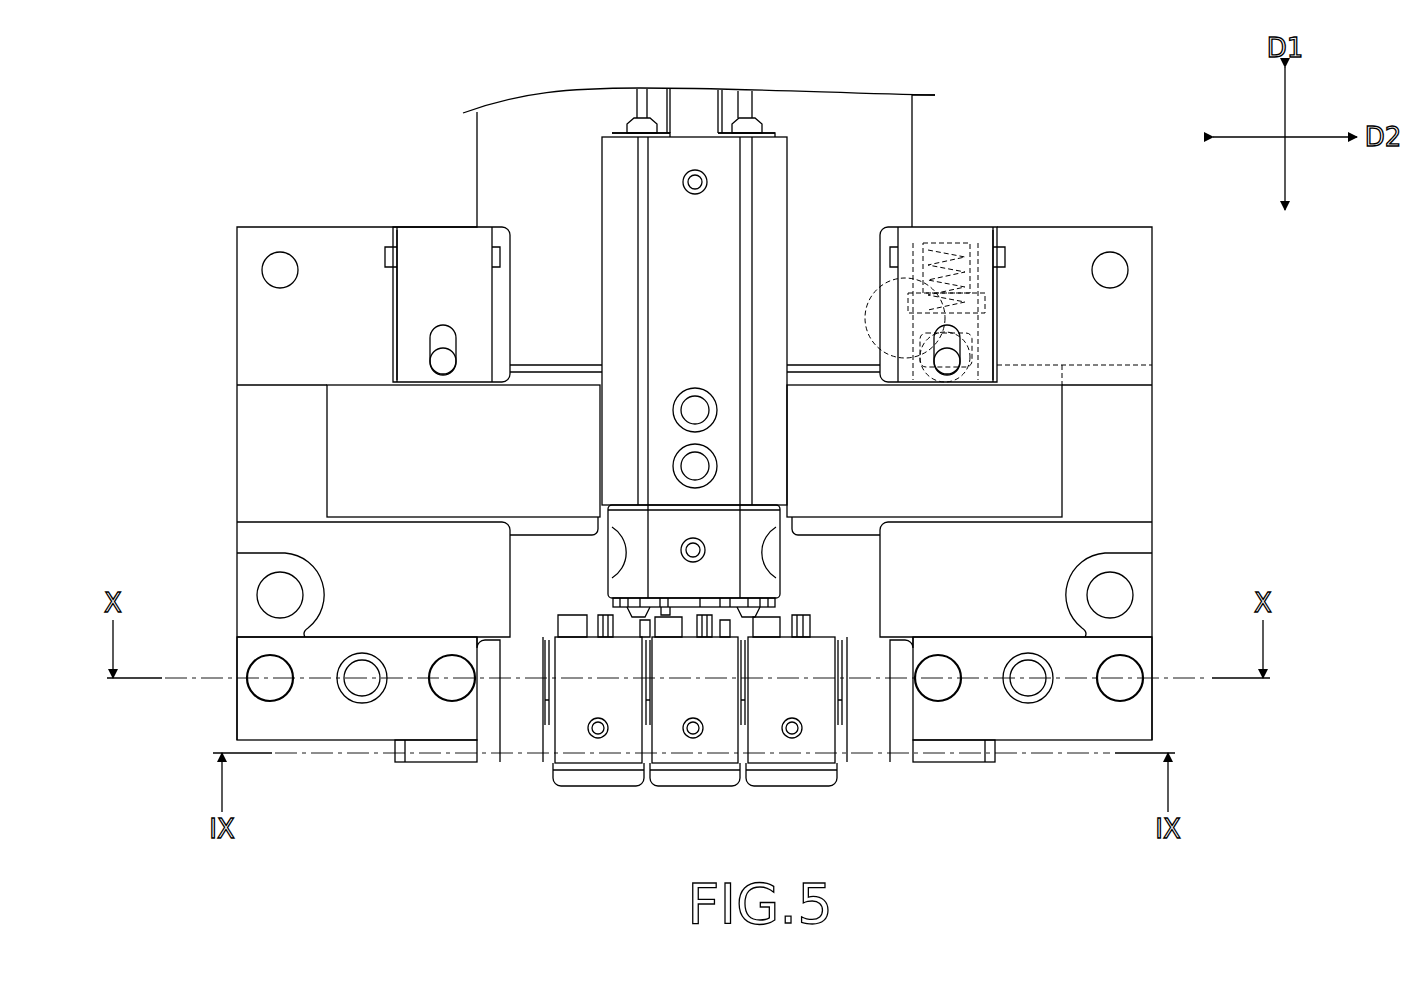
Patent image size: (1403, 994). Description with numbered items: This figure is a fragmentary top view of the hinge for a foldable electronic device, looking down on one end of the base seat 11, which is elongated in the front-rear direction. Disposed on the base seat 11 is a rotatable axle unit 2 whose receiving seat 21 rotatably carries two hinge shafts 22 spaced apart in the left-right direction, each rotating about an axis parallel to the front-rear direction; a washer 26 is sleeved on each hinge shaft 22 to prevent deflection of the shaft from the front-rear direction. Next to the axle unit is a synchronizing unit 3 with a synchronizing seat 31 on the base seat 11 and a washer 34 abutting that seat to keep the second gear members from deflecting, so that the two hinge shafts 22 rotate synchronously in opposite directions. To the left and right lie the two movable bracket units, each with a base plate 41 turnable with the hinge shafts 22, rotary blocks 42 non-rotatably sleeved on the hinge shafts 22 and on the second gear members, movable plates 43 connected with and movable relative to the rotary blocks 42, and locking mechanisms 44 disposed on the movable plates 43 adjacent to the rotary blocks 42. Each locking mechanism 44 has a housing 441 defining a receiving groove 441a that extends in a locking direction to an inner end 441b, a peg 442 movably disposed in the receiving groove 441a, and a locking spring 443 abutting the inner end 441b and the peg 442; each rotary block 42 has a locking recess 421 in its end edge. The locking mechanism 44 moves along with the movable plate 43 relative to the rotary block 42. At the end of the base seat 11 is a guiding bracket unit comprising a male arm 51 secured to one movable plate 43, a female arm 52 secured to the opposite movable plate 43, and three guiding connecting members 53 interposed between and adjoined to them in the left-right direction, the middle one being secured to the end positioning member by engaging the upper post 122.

The rotatable axle unit 2 is at (692, 128).
The base seat 11 is at (708, 120).
The receiving seat 21 is at (672, 234).
The hinge shaft 22 is at (645, 118).
The washer 26 is at (620, 128).
The synchronizing unit 3 is at (696, 541).
The synchronizing seat 31 is at (722, 532).
The washer 34 is at (612, 600).
The base plate 41 is at (477, 135).
The rotary block 42 is at (350, 448).
The movable plate 43 is at (254, 543).
The locking mechanism 44 is at (437, 222).
The housing 441 is at (418, 252).
The receiving groove 441a is at (962, 306).
The inner end 441b is at (968, 246).
The peg 442 is at (442, 360).
The locking spring 443 is at (945, 250).
The locking recess 421 is at (975, 362).
The male arm 51 is at (335, 722).
The female arm 52 is at (1070, 723).
The guiding connecting member 53 is at (792, 787).
The upper post 122 is at (697, 726).